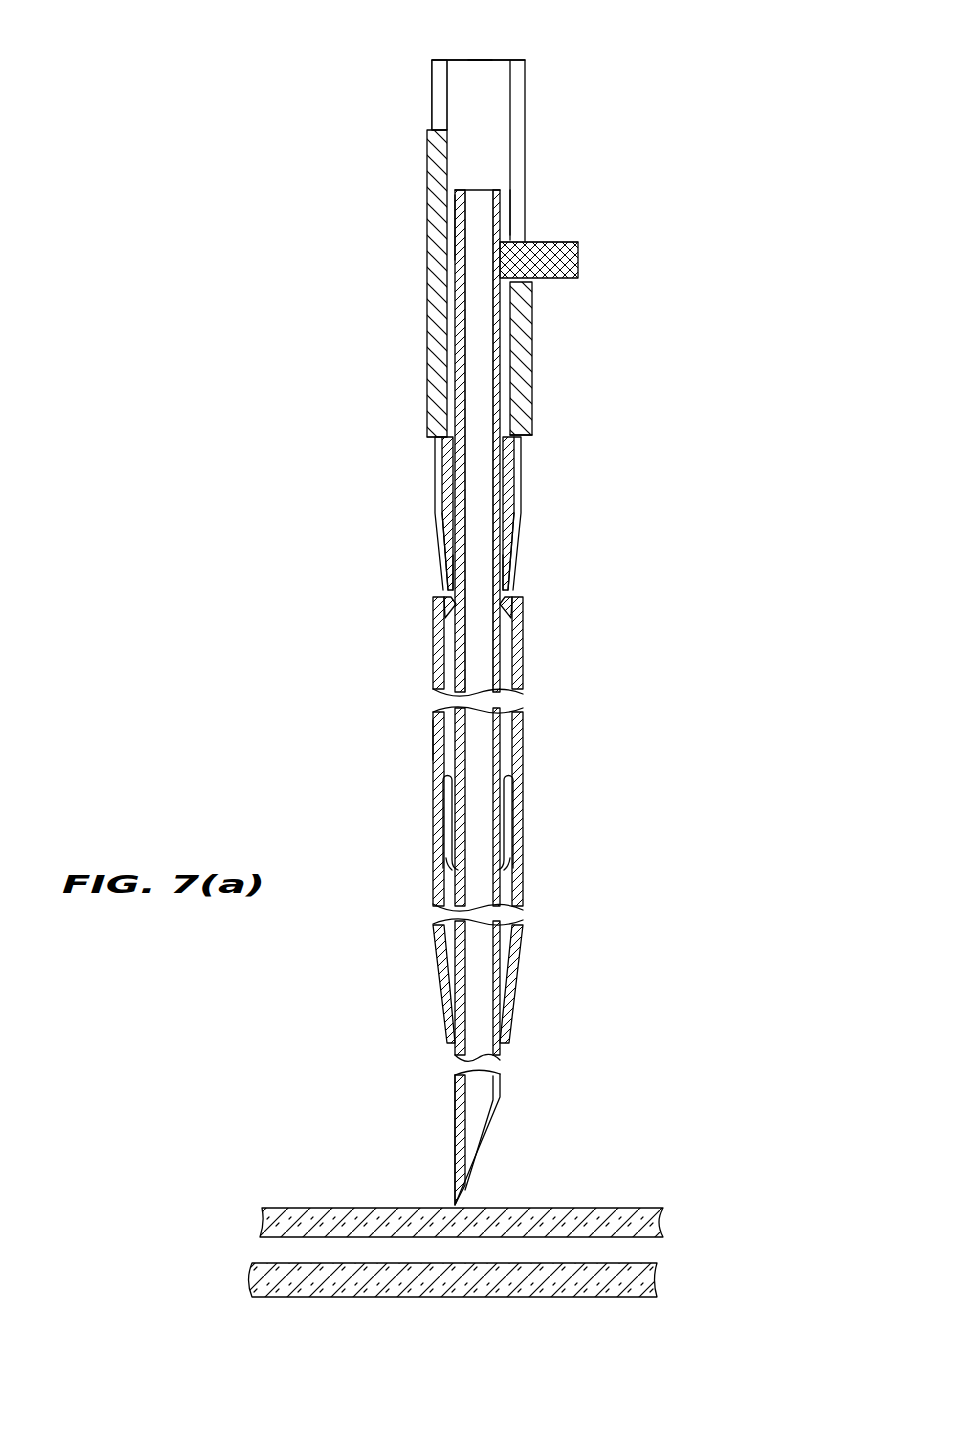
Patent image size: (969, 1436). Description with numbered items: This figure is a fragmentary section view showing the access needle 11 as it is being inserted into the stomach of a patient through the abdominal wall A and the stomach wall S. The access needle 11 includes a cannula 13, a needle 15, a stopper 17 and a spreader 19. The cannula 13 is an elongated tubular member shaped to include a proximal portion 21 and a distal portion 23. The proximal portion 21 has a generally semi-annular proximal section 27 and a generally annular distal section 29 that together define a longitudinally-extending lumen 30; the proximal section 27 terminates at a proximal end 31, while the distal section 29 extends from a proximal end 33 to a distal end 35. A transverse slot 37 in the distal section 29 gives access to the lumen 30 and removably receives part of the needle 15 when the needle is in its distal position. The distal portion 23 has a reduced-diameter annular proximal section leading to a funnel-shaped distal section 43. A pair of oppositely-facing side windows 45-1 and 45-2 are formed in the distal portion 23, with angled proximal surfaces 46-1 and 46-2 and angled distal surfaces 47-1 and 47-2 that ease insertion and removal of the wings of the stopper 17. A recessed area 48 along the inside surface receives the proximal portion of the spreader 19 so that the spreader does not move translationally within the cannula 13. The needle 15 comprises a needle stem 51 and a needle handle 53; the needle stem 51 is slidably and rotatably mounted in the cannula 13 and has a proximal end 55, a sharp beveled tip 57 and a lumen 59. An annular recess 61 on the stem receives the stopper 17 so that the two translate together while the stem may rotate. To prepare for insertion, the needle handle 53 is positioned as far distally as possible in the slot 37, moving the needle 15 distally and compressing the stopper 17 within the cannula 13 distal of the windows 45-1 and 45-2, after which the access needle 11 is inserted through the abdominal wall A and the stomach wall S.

The access needle 11 is at (266, 102).
The cannula 13 is at (568, 313).
The needle 15 is at (446, 737).
The stopper 17 is at (447, 815).
The spreader 19 is at (437, 448).
The proximal portion 21 is at (381, 263).
The distal portion 23 is at (555, 658).
The proximal section 27 is at (432, 63).
The distal section 29 is at (525, 386).
The lumen 30 is at (497, 93).
The proximal end 31 is at (481, 58).
The proximal end 33 is at (430, 128).
The distal end 35 is at (528, 437).
The transverse slot 37 is at (518, 205).
The funnel-shaped distal section 43 is at (520, 968).
The side window 45-1 is at (444, 572).
The side window 45-2 is at (512, 572).
The proximal surface 46-1 is at (441, 538).
The proximal surface 46-2 is at (516, 538).
The distal surface 47-1 is at (433, 592).
The distal surface 47-2 is at (523, 592).
The recessed area 48 is at (436, 500).
The needle stem 51 is at (455, 215).
The needle handle 53 is at (580, 255).
The proximal end 55 is at (476, 190).
The beveled tip 57 is at (487, 1148).
The lumen 59 is at (467, 302).
The annular recess 61 is at (447, 872).
The abdominal wall A is at (610, 1208).
The stomach wall S is at (610, 1297).